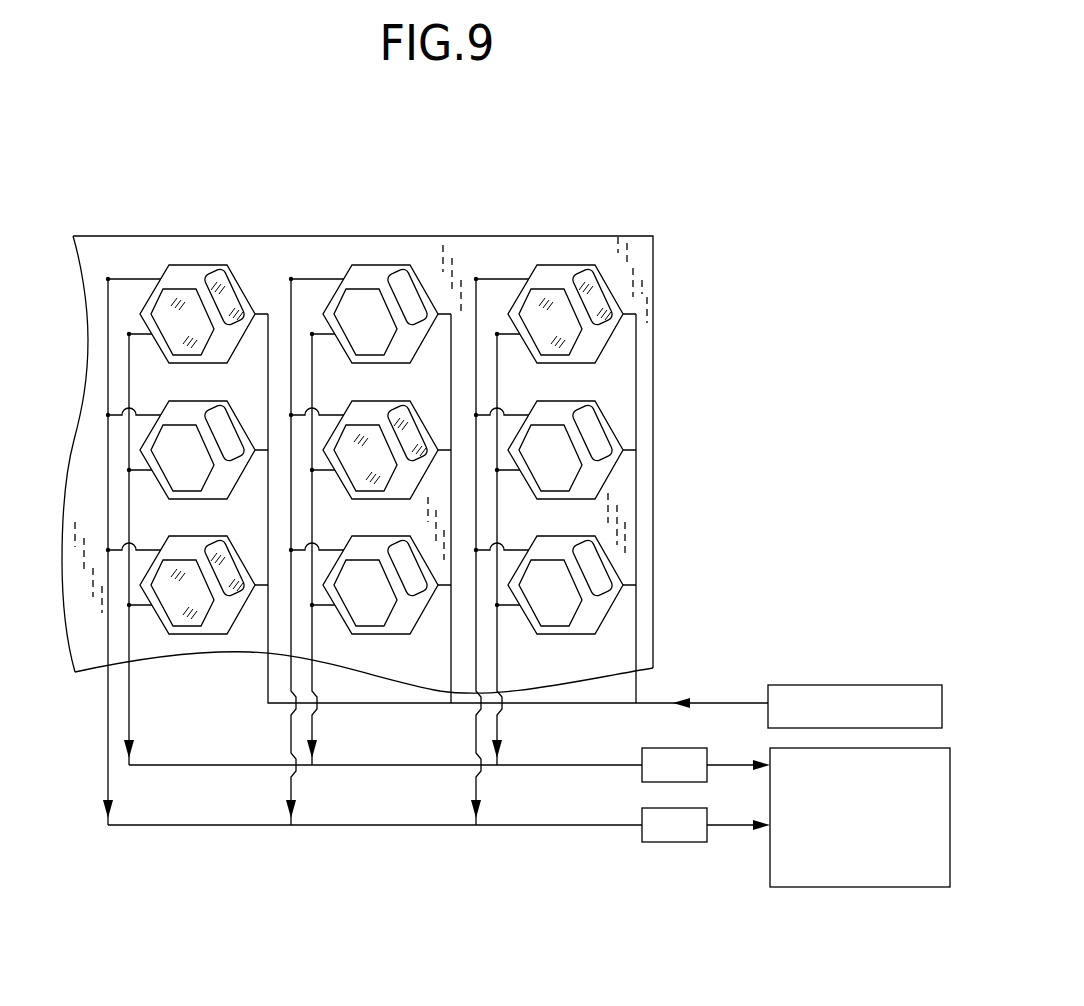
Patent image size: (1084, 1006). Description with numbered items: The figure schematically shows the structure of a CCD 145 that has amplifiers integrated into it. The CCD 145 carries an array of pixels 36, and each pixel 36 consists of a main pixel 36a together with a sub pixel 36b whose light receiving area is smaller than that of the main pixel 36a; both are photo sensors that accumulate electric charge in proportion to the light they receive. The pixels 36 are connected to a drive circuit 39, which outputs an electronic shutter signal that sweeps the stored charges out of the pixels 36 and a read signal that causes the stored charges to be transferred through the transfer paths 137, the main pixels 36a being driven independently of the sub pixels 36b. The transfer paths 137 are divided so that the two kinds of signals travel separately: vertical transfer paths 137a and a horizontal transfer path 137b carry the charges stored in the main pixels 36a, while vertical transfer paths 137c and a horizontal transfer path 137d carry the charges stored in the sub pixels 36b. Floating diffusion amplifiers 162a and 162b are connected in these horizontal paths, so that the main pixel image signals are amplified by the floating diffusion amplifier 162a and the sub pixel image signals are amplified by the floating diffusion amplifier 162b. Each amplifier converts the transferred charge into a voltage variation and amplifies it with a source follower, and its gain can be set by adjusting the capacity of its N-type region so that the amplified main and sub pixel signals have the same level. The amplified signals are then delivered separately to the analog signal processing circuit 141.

The CCD 145 is at (396, 200).
The pixel 36 is at (356, 422).
The main pixel 36a is at (183, 292).
The sub pixel 36b is at (213, 274).
The transfer paths 137 is at (420, 634).
The vertical transfer paths 137a is at (131, 727).
The horizontal transfer path 137b is at (581, 767).
The vertical transfer paths 137c is at (108, 788).
The horizontal transfer path 137d is at (632, 827).
The drive circuit 39 is at (818, 685).
The floating diffusion amplifier 162a is at (655, 748).
The floating diffusion amplifier 162b is at (702, 843).
The analog signal processing circuit 141 is at (795, 888).